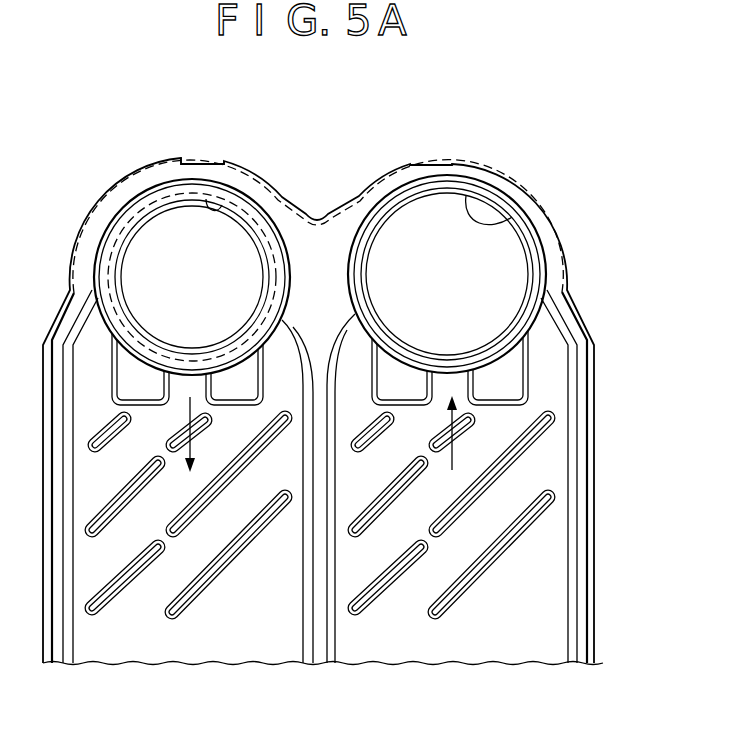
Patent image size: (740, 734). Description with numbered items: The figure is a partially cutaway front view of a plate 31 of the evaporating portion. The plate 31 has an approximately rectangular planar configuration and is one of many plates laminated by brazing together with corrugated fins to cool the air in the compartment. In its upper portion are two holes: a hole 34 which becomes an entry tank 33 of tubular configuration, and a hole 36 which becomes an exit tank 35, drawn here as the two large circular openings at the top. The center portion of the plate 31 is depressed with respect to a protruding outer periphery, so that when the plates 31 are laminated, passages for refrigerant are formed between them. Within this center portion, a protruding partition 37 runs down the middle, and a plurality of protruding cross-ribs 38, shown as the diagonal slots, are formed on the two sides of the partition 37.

The plate 31 is at (550, 462).
The entry tank 33 is at (176, 176).
The hole 34 is at (222, 210).
The exit tank 35 is at (486, 180).
The hole 36 is at (477, 223).
The partition 37 is at (323, 658).
The cross-ribs 38 is at (520, 528).